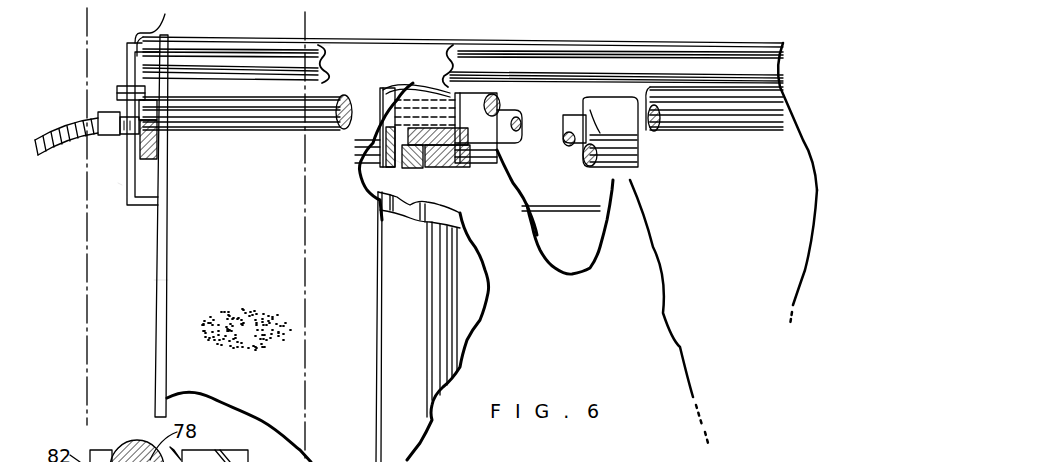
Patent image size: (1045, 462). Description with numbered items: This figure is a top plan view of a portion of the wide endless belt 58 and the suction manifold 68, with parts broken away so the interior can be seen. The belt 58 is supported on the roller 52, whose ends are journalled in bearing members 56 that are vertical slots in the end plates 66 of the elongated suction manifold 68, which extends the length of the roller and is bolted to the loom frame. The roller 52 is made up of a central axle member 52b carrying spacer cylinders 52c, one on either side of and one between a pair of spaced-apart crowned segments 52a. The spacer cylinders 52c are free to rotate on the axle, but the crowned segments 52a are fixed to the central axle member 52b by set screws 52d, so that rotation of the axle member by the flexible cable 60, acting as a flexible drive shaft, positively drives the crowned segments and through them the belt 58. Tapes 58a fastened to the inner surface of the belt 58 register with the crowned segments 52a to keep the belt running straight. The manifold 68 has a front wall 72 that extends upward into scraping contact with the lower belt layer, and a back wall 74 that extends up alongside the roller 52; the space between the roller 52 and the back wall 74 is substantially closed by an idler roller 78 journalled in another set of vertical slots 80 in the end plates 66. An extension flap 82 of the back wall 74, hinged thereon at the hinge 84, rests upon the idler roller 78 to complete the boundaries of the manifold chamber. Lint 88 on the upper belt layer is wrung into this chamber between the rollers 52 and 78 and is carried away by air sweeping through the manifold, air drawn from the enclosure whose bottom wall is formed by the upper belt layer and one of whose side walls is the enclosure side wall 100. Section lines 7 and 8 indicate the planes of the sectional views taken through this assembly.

The section line 7- 7 is at (338, 21).
The section line 8- 8 is at (127, 18).
The roller 52 is at (503, 102).
The crowned segments 52a is at (437, 167).
The central axle member 52b is at (567, 115).
The spacer cylinders 52c is at (150, 135).
The set screws 52d is at (405, 165).
The bearing members 56 is at (127, 137).
The endless belt 58 is at (182, 316).
The tapes 58a is at (460, 220).
The flexible cable 60 is at (72, 117).
The end plates 66 is at (120, 183).
The suction manifold 68 is at (317, 50).
The front wall 72 is at (135, 207).
The back wall 74 is at (154, 22).
The idler roller 78 is at (214, 87).
The vertical slots 80 is at (117, 89).
The extension flap 82 is at (710, 70).
The hinge 84 is at (238, 40).
The lint 88 is at (278, 350).
The enclosure side wall 100 is at (153, 272).